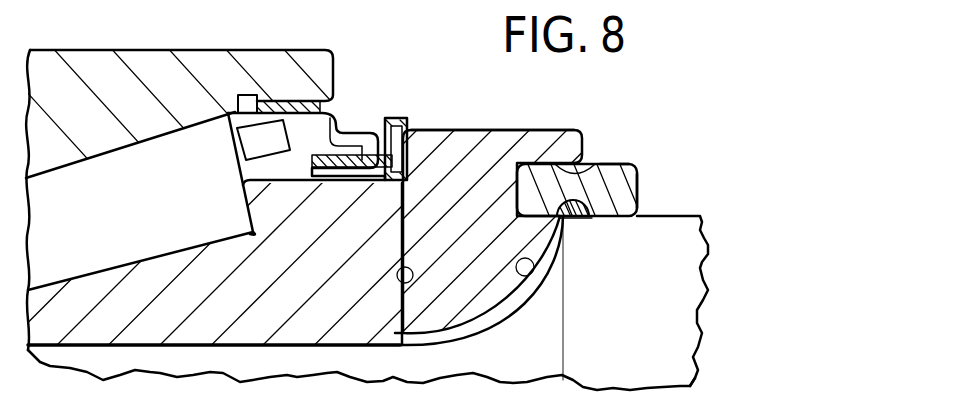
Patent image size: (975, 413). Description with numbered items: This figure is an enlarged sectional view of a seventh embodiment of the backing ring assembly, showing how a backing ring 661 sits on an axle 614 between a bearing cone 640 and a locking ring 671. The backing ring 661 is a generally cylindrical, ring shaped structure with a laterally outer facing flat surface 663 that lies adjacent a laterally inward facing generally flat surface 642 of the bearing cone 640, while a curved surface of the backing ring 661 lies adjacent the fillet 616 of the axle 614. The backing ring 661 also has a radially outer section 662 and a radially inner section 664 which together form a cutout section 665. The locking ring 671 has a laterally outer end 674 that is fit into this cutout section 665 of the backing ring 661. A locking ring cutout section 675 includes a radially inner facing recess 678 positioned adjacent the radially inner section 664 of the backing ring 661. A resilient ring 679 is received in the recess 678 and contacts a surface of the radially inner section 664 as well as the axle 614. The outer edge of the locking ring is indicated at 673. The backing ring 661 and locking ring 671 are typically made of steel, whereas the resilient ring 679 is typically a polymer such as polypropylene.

The axle 614 is at (672, 216).
The fillet 616 is at (564, 302).
The bearing cone 640 is at (352, 347).
The laterally inward facing generally flat surface 642 is at (397, 279).
The backing ring 661 is at (448, 130).
The radially outer section 662 is at (570, 130).
The laterally outer facing flat surface 663 is at (402, 252).
The radially inner section 664 is at (577, 221).
The cutout section 665 is at (583, 170).
The locking ring 671 is at (626, 164).
The outer edge of seal 673 is at (640, 188).
The laterally outer end 674 is at (538, 164).
The locking ring cutout section 675 is at (573, 201).
The radially inner facing recess 678 is at (580, 219).
The resilient ring 679 is at (583, 228).